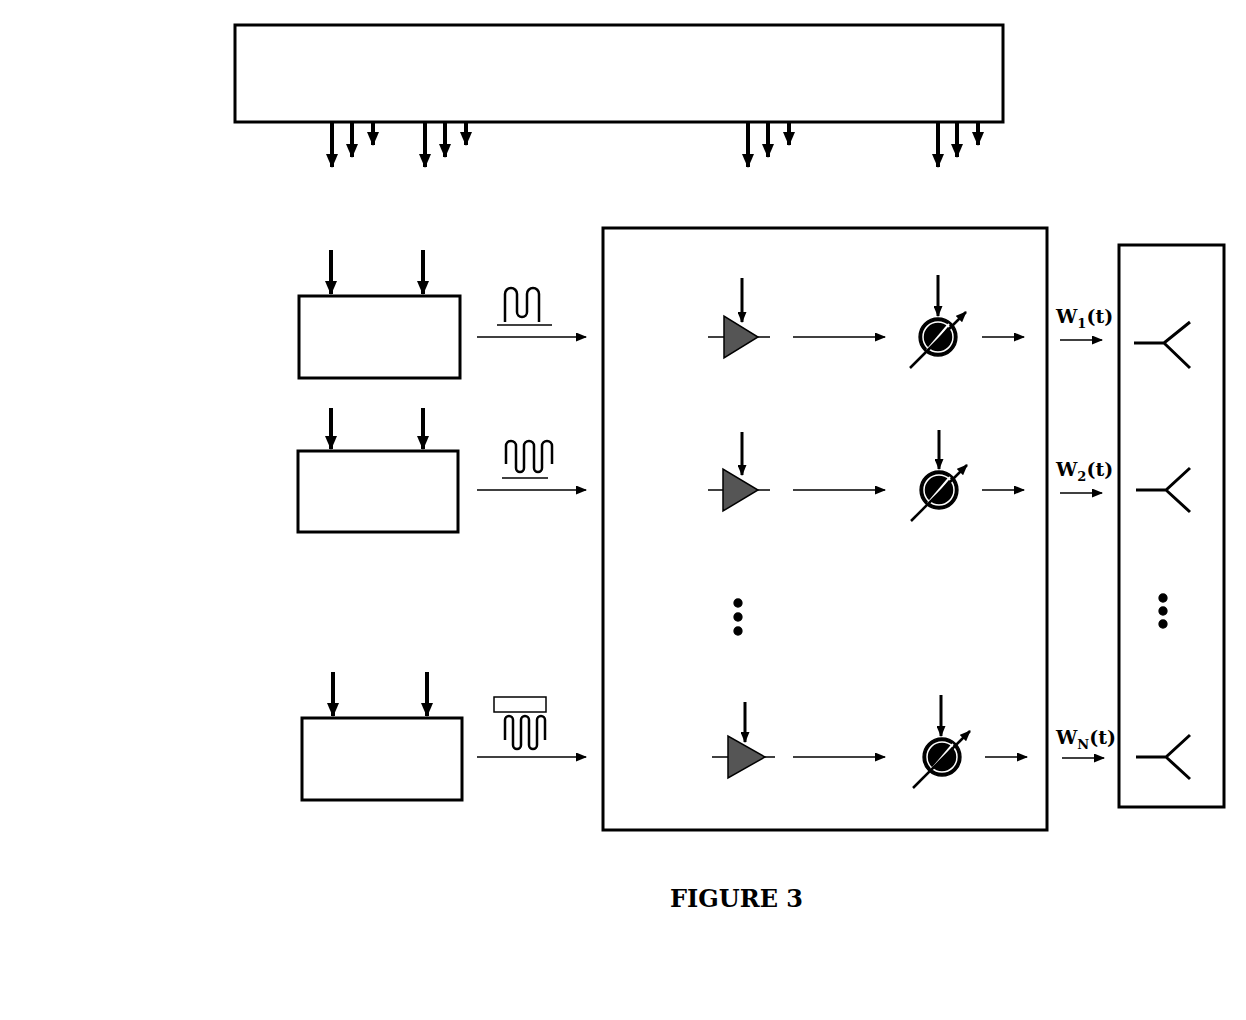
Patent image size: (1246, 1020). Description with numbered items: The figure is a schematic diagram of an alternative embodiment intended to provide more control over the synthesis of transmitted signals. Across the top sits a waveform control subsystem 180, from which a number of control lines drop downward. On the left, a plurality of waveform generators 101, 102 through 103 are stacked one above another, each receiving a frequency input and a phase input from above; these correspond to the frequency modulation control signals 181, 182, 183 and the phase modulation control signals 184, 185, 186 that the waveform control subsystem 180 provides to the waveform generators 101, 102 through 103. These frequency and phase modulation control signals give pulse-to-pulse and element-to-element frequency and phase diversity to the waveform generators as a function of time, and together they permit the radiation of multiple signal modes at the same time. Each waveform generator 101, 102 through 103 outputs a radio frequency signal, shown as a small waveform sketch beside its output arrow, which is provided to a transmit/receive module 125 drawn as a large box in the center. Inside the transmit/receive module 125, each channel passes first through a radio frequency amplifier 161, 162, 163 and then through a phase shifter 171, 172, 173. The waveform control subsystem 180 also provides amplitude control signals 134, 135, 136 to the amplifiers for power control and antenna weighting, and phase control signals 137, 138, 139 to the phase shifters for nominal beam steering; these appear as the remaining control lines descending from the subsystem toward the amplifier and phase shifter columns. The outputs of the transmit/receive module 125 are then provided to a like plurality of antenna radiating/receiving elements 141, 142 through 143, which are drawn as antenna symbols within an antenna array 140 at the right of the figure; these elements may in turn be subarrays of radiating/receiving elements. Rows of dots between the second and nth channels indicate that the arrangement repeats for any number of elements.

The waveform control subsystem 180 is at (230, 78).
The frequency modulation control signal 181 is at (322, 166).
The frequency modulation control signal 182 is at (348, 166).
The frequency modulation control signal 183 is at (370, 160).
The phase modulation control signal 184 is at (430, 176).
The phase modulation control signal 185 is at (452, 168).
The phase modulation control signal 186 is at (480, 158).
The amplitude control signal 134 is at (738, 164).
The amplitude control signal 135 is at (764, 166).
The amplitude control signal 136 is at (787, 160).
The phase control signal 137 is at (928, 164).
The phase control signal 138 is at (953, 166).
The phase control signal 139 is at (976, 160).
The waveform generator 101 is at (296, 330).
The waveform generator 102 is at (296, 488).
The waveform generator 103 is at (298, 757).
The transmit/receive module 125 is at (598, 837).
The radio frequency amplifier 161 is at (724, 360).
The radio frequency amplifier 162 is at (724, 513).
The radio frequency amplifier 163 is at (726, 780).
The phase shifter 171 is at (937, 361).
The phase shifter 172 is at (938, 514).
The phase shifter 173 is at (940, 781).
The antenna array 140 is at (1183, 241).
The radiating/receiving element 141 is at (1174, 320).
The radiating/receiving element 142 is at (1174, 468).
The radiating/receiving element 143 is at (1174, 735).